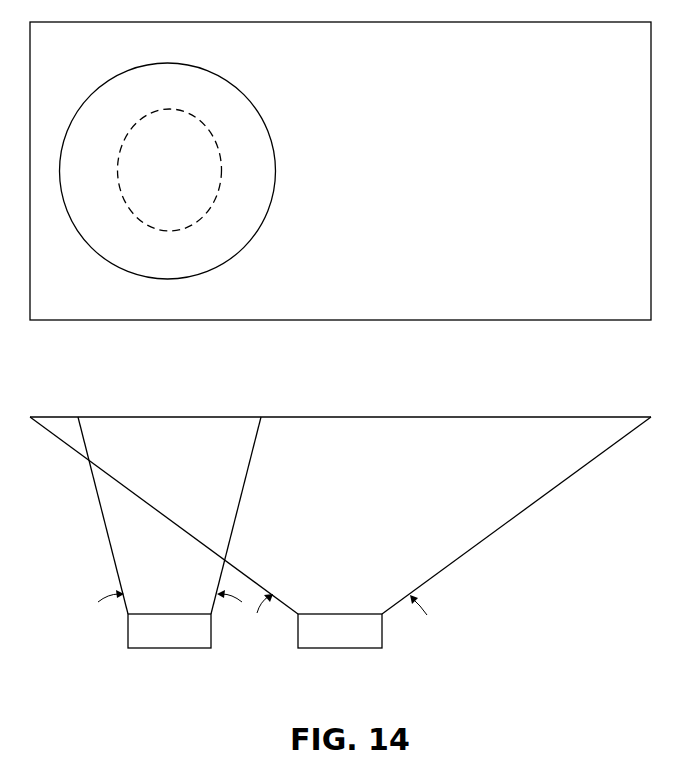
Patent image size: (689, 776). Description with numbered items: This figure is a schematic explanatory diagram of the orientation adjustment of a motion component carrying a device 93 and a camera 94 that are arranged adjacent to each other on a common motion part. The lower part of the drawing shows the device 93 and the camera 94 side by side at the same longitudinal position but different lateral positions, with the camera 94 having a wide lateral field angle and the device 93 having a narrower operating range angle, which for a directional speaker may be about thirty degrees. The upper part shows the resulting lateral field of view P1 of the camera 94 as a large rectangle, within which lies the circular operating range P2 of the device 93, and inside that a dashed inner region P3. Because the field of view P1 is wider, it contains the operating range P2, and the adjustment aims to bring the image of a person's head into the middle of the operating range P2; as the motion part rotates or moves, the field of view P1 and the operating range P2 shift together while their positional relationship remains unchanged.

The field of view P1 is at (639, 57).
The operating range P2 is at (259, 153).
The third plane / inner region P3 is at (183, 186).
The device 93 is at (170, 648).
The camera 94 is at (340, 648).